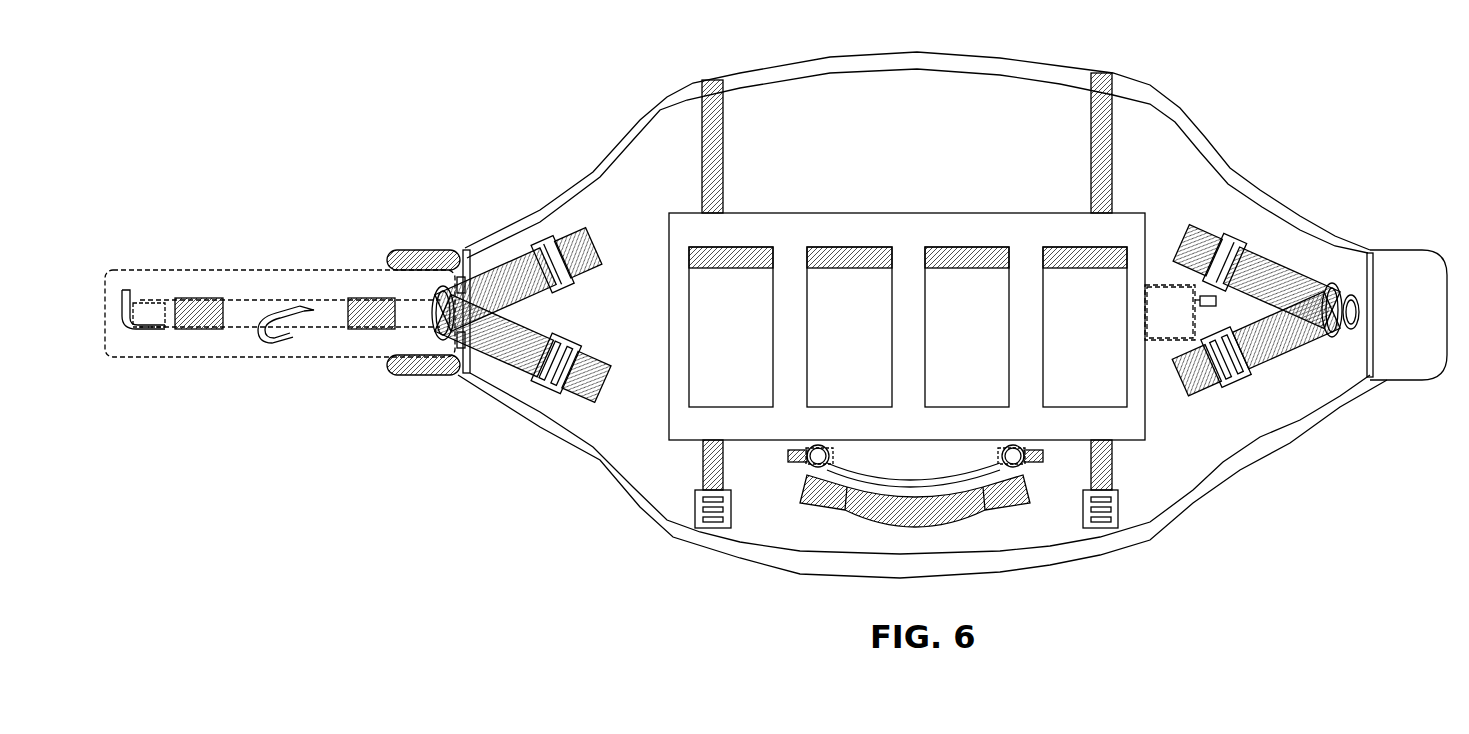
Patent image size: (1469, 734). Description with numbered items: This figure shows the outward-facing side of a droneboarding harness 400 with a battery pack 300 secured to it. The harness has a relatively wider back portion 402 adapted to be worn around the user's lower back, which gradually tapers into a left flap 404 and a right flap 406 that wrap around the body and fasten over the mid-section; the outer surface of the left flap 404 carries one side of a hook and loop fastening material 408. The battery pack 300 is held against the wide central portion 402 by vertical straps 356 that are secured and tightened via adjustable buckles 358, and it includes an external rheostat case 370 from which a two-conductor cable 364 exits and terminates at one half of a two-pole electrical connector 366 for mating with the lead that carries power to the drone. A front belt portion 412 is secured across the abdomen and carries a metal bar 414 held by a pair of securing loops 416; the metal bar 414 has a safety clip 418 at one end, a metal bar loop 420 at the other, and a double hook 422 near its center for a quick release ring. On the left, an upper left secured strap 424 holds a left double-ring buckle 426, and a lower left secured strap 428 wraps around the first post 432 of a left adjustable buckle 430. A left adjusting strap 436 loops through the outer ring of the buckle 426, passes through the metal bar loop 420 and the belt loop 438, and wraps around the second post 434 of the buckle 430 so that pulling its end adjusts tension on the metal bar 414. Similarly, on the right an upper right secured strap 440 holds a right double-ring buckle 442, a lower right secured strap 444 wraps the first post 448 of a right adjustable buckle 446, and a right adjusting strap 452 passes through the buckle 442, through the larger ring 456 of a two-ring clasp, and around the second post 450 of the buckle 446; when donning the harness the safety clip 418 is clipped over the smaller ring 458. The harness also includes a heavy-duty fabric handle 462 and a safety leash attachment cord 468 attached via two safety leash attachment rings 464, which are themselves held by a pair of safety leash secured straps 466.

The battery pack 300 is at (885, 213).
The vertical straps 356 is at (723, 145).
The adjustable buckles 358 is at (695, 495).
The two-conductor cable 364 is at (1198, 296).
The two-pole electrical connector 366 is at (1212, 306).
The external rheostat case 370 is at (1192, 340).
The droneboarding harness 400 is at (917, 53).
The back portion 402 is at (660, 110).
The left flap 404 is at (428, 250).
The right flap 406 is at (1418, 250).
The hook and loop fastening material 408 is at (415, 375).
The front belt portion 412 is at (178, 270).
The metal bar 414 is at (230, 300).
The securing loops 416 is at (215, 330).
The safety clip 418 is at (140, 328).
The metal bar loop 420 is at (438, 330).
The double hook 422 is at (268, 343).
The upper left secured strap 424 is at (590, 265).
The left double-ring buckle 426 is at (560, 232).
The lower left secured strap 428 is at (600, 362).
The left adjustable buckle 430 is at (560, 352).
The first post 432 is at (565, 395).
The second post 434 is at (545, 400).
The left adjusting strap 436 is at (520, 303).
The belt loop 438 is at (468, 240).
The upper right secured strap 440 is at (1192, 225).
The right double-ring buckle 442 is at (1218, 228).
The lower right secured strap 444 is at (1183, 378).
The right adjustable buckle 446 is at (1218, 395).
The first post 448 is at (1228, 388).
The second post 450 is at (1243, 374).
The right adjusting strap 452 is at (1272, 263).
The larger ring 456 is at (1328, 283).
The smaller ring 458 is at (1356, 296).
The handle 462 is at (945, 522).
The safety leash attachment rings 464 is at (830, 455).
The safety leash secured straps 466 is at (788, 455).
The safety leash attachment cord 468 is at (900, 478).